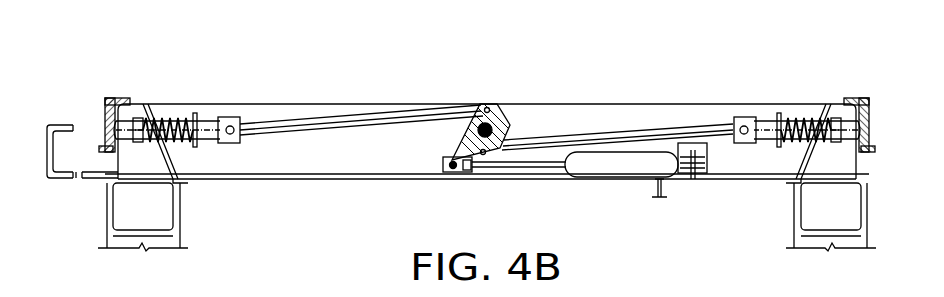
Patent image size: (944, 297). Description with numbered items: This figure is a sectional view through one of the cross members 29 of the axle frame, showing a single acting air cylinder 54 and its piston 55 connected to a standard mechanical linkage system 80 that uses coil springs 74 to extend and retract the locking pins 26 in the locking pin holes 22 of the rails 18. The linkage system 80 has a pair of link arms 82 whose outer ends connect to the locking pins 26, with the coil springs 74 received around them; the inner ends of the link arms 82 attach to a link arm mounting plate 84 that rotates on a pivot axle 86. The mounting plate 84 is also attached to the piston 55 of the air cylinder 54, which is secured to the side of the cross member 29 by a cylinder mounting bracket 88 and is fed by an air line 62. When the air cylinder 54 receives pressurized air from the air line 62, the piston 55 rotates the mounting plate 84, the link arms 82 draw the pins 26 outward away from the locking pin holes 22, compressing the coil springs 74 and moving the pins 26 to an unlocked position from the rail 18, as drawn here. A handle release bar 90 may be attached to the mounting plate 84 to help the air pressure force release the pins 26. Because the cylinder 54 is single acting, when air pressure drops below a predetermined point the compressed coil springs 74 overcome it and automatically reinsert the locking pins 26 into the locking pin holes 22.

The rail 18 is at (115, 99).
The locking pin holes 22 is at (105, 128).
The locking pins 26 is at (127, 133).
The cross member 29 is at (305, 104).
The single acting air cylinder 54 is at (595, 166).
The piston 55 is at (505, 171).
The air line 62 is at (657, 184).
The coil springs 74 is at (160, 119).
The mechanical linkage system 80 is at (367, 117).
The link arms 82 is at (328, 126).
The link arm mounting plate 84 is at (498, 118).
The pivot axle 86 is at (494, 136).
The cylinder mounting bracket 88 is at (703, 175).
The handle release bar 90 is at (60, 179).